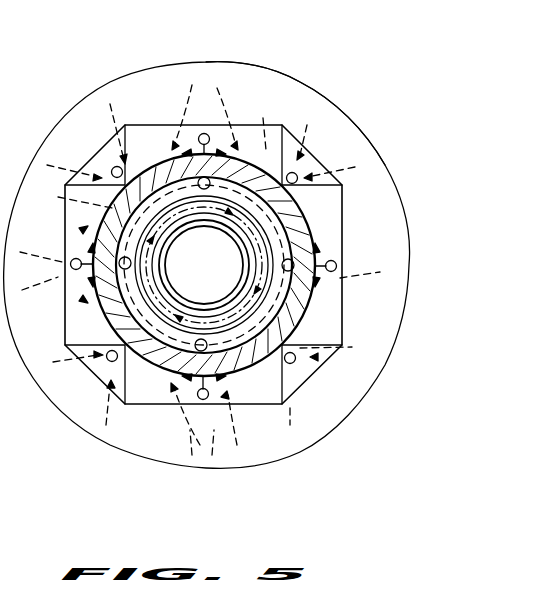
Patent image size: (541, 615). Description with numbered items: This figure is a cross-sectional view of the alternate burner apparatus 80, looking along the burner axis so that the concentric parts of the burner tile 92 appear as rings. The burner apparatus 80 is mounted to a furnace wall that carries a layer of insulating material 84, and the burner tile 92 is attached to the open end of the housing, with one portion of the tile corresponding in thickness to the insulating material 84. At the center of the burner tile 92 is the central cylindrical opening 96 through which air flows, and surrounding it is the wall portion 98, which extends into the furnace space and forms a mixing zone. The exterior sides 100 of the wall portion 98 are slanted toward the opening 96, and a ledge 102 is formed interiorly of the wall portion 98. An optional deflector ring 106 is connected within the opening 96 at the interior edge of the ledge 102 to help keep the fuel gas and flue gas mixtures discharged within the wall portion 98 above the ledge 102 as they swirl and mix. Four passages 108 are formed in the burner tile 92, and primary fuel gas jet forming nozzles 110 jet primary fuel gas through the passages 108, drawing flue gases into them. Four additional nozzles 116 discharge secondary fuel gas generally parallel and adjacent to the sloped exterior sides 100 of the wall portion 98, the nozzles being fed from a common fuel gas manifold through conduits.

The burner apparatus 80 is at (296, 66).
The layer of insulating material 84 is at (143, 72).
The burner tile 92 is at (321, 312).
The central cylindrical opening 96 is at (358, 222).
The wall portion 98 is at (310, 314).
The exterior sides 100 is at (165, 318).
The ledge 102 is at (342, 201).
The deflector ring 106 is at (160, 330).
The passages 108 is at (262, 124).
The primary fuel gas jet forming nozzles 110 is at (122, 168).
The additional nozzles 116 is at (208, 134).